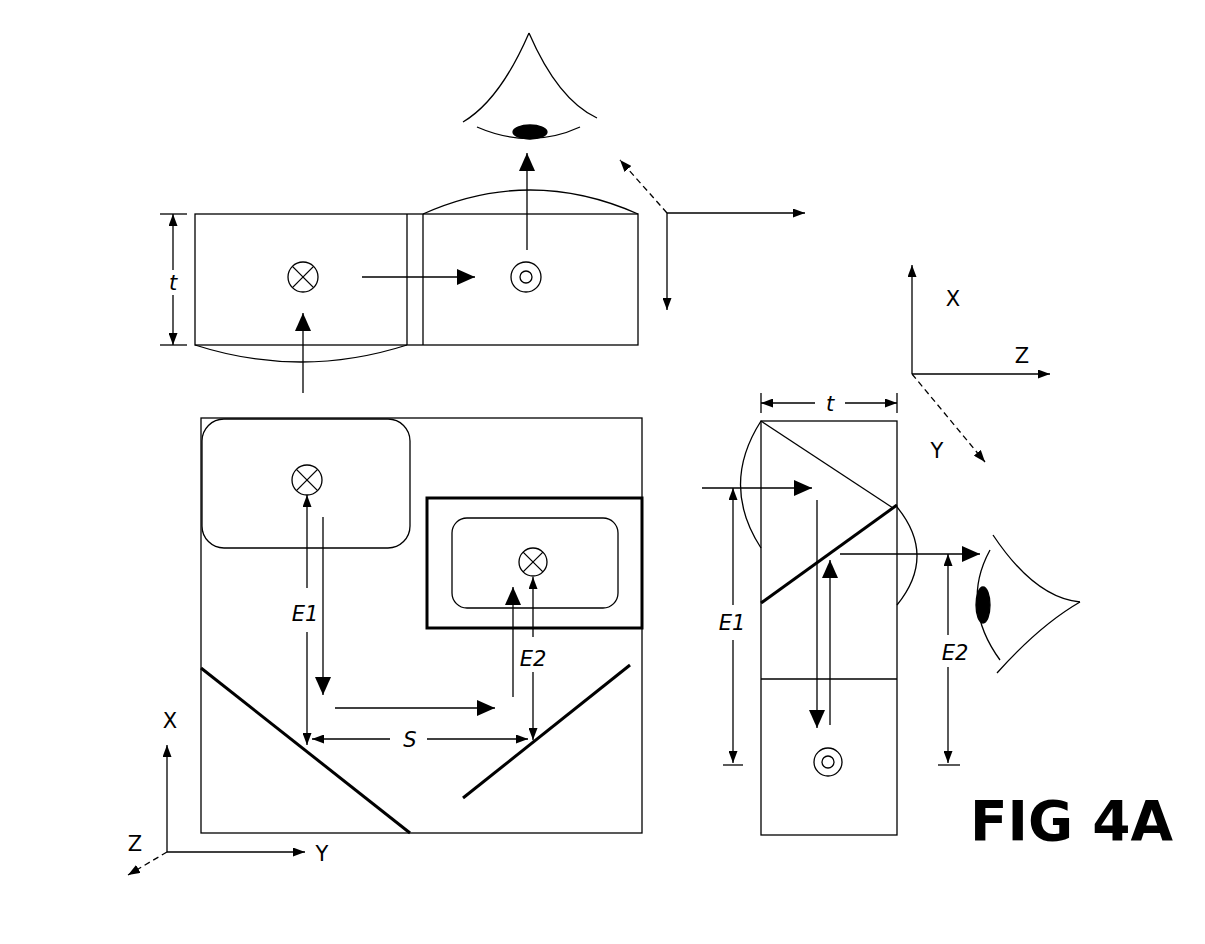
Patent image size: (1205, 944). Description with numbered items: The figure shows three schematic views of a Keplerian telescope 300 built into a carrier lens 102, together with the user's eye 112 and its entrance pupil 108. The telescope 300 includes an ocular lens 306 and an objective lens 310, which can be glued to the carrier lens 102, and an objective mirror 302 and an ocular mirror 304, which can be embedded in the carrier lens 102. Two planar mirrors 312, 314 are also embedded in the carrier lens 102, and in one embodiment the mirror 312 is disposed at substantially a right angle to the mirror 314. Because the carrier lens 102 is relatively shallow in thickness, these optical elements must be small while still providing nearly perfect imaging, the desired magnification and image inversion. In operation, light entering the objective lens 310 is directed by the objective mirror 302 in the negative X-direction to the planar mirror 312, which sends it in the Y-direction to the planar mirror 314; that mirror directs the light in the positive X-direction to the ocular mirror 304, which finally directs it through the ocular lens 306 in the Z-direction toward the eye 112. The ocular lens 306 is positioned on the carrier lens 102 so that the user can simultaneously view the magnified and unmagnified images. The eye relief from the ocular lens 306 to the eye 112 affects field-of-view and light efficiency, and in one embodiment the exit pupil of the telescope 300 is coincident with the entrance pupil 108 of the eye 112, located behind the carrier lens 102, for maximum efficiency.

The carrier lens 102 is at (408, 213).
The entrance pupil 108 is at (540, 138).
The eye 112 is at (496, 109).
The Keplerian telescope 300 is at (883, 187).
The objective mirror 302 is at (198, 488).
The ocular mirror 304 is at (643, 565).
The ocular lens 306 is at (452, 198).
The objective lens 310 is at (247, 362).
The planar mirror 312 is at (262, 217).
The planar mirror 314 is at (550, 347).